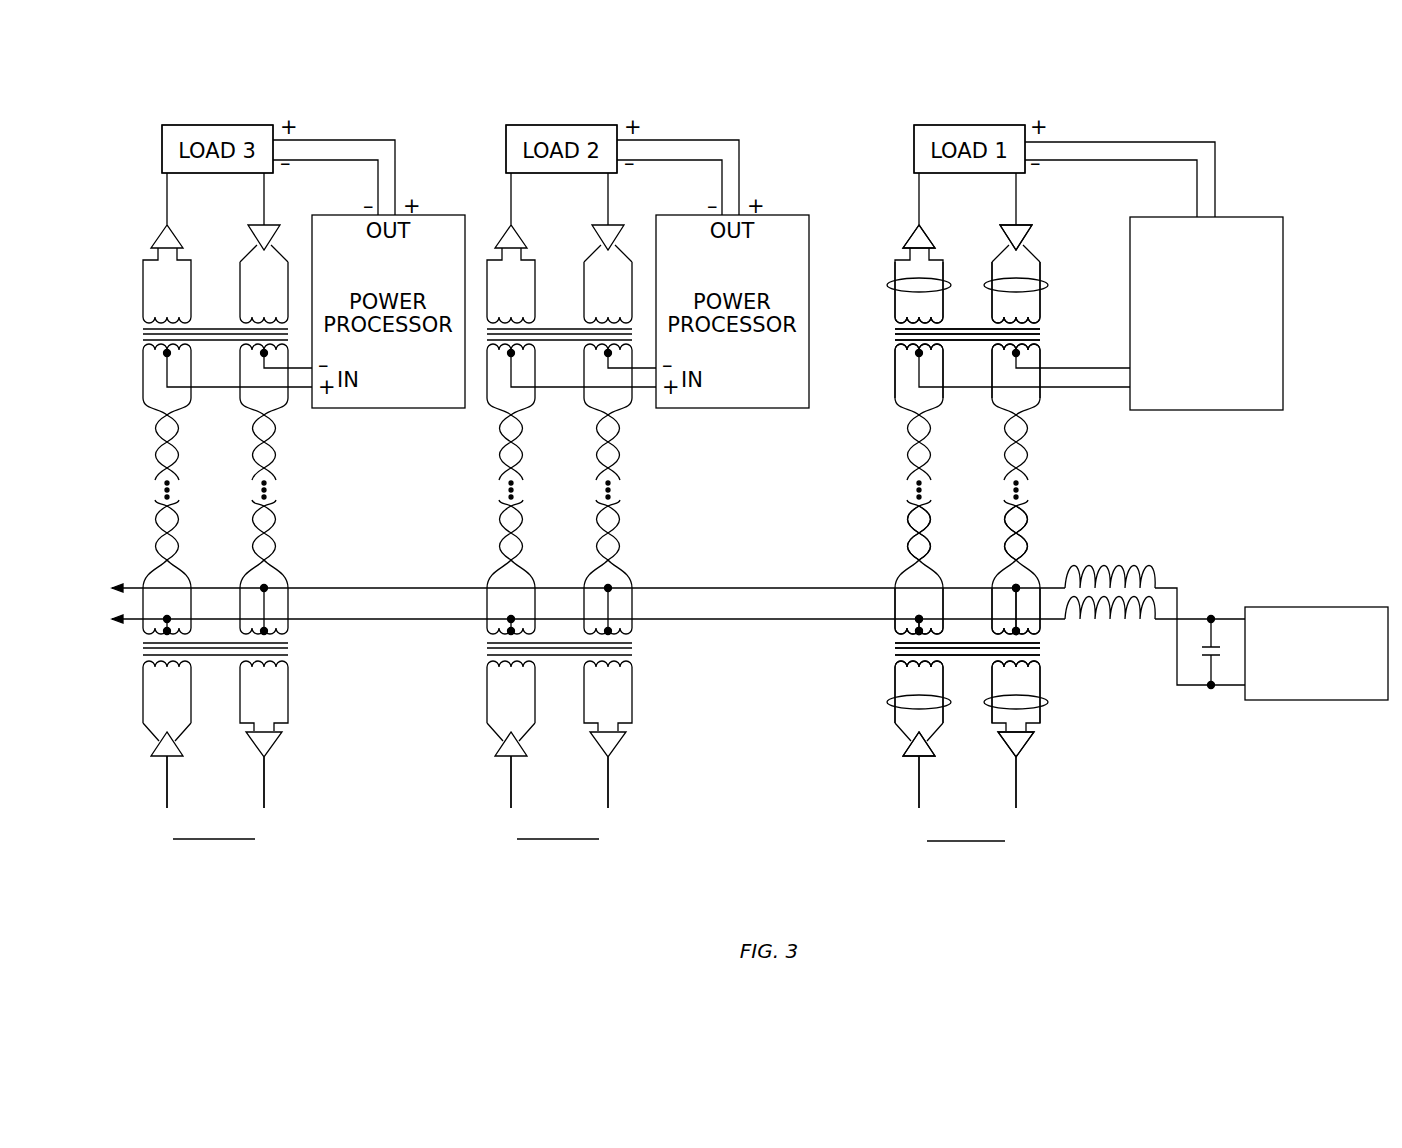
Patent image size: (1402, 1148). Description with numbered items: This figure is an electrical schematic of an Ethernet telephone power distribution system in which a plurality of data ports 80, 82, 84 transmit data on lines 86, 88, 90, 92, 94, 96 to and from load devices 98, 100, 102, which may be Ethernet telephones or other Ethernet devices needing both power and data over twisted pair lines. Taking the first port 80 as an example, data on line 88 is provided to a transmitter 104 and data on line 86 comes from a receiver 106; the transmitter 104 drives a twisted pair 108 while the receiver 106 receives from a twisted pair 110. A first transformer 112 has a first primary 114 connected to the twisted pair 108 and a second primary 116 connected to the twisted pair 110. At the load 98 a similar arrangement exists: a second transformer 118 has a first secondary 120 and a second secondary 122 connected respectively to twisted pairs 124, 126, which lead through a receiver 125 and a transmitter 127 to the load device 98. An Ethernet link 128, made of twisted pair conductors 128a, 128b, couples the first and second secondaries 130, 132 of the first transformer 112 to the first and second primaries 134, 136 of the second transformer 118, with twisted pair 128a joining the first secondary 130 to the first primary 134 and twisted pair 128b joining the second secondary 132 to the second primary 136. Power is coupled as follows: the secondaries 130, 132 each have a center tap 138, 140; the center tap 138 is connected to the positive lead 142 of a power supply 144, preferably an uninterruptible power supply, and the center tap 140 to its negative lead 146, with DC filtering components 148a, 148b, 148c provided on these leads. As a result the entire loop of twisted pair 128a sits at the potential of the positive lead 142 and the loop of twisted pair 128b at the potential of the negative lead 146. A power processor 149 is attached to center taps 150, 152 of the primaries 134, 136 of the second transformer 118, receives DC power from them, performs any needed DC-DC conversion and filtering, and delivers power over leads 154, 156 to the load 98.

The data port 80 is at (957, 845).
The data port 82 is at (549, 845).
The data port 84 is at (205, 845).
The line 86 is at (1016, 783).
The line 88 is at (919, 780).
The line 90 is at (608, 775).
The line 92 is at (511, 775).
The line 94 is at (264, 775).
The line 96 is at (167, 775).
The load device 98 is at (914, 152).
The load device 100 is at (549, 173).
The load device 102 is at (205, 173).
The transmitter 104 is at (907, 750).
The receiver 106 is at (1027, 750).
The twisted pair 108 is at (887, 702).
The twisted pair 110 is at (1048, 702).
The first transformer 112 is at (890, 650).
The first primary 114 is at (895, 660).
The second primary 116 is at (1040, 660).
The second transformer 118 is at (890, 337).
The first secondary 120 is at (895, 320).
The second secondary 122 is at (1040, 322).
The twisted pair 124 is at (888, 285).
The receiver 125 is at (908, 240).
The twisted pair 126 is at (1047, 285).
The transmitter 127 is at (1004, 240).
The Ethernet link 128 is at (1042, 489).
The twisted pair conductor 128a is at (907, 525).
The twisted pair conductor 128b is at (1025, 525).
The first secondary 130 is at (893, 625).
The second secondary 132 is at (1040, 628).
The first primary 134 is at (895, 362).
The second primary 136 is at (1040, 362).
The center tap 138 is at (915, 626).
The center tap 140 is at (1012, 626).
The positive lead 142 is at (670, 619).
The power supply 144 is at (1318, 607).
The negative lead 146 is at (670, 588).
The DC filtering component 148a is at (1203, 650).
The DC filtering component 148b is at (1125, 623).
The DC filtering component 148c is at (1155, 575).
The power processor 149 is at (1283, 285).
The center tap 150 is at (924, 362).
The center tap 152 is at (1022, 362).
The lead 154 is at (1185, 142).
The lead 156 is at (1193, 168).